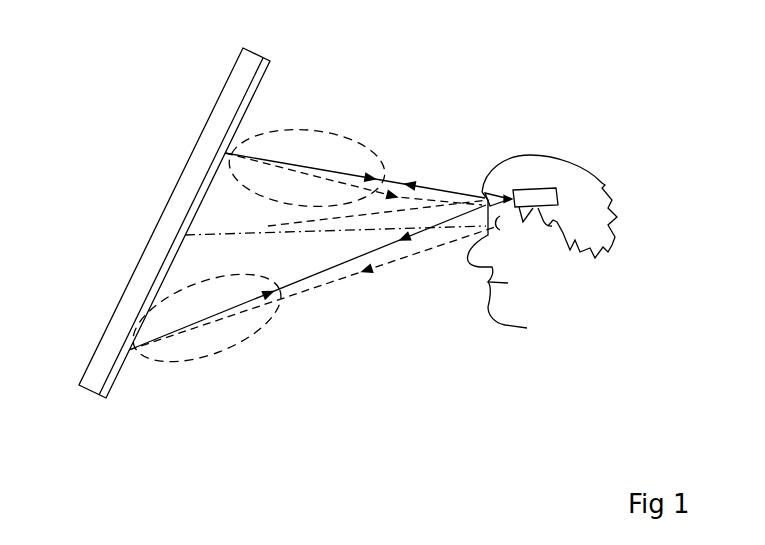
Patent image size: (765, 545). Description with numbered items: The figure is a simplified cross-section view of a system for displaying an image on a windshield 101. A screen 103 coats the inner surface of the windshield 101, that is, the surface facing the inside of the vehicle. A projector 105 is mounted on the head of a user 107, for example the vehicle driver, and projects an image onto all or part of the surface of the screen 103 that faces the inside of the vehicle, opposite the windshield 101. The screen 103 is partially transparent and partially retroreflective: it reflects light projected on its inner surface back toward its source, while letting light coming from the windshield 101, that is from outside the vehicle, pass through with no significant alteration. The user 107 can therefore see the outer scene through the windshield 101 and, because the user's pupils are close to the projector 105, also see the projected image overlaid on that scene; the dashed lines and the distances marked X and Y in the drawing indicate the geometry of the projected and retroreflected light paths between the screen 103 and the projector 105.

The windshield 101 is at (236, 86).
The screen 103 is at (103, 393).
The projector 105 is at (544, 196).
The user 107 is at (583, 170).
The distance X is at (357, 230).
The distance Y is at (288, 222).